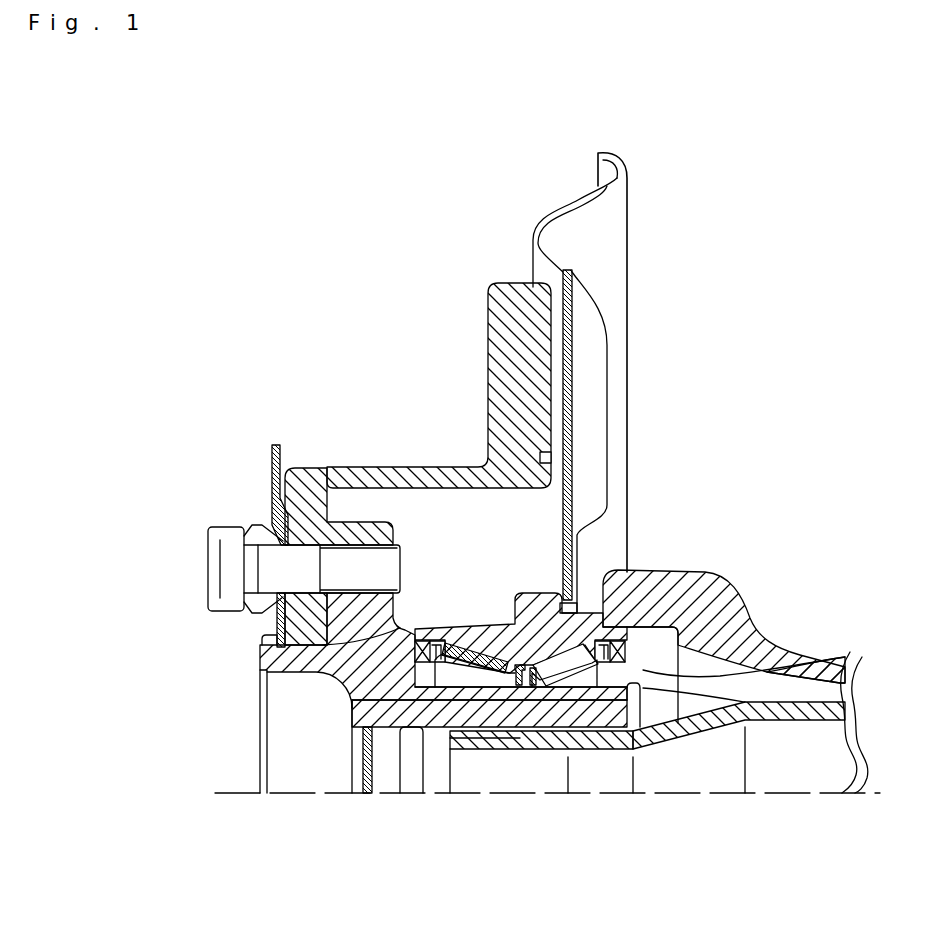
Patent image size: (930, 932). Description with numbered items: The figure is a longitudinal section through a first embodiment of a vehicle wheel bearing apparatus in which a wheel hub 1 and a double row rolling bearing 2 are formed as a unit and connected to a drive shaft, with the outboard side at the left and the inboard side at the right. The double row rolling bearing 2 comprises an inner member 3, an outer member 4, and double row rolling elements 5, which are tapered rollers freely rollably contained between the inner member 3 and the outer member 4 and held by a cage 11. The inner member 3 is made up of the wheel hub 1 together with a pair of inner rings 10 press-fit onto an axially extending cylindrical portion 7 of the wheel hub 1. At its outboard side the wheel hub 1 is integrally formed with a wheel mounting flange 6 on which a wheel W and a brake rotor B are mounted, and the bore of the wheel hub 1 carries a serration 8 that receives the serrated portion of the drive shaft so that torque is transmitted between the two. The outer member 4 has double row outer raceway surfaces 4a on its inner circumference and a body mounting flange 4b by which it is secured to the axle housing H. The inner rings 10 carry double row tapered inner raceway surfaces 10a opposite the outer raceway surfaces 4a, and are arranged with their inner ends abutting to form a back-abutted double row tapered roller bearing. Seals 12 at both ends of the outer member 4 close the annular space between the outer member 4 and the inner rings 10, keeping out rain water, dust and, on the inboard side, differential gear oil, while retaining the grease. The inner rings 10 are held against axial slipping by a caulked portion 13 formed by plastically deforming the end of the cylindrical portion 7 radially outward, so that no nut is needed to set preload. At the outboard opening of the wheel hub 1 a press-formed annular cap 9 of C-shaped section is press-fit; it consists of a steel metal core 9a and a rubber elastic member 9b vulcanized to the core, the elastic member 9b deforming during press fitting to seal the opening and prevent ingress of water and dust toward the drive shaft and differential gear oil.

The wheel hub 1 is at (310, 688).
The double row rolling bearing 2 is at (499, 608).
The inner member 3 is at (485, 678).
The outer member 4 is at (478, 628).
The outer raceway surfaces 4a is at (456, 632).
The body mounting flange 4b is at (539, 603).
The rolling elements 5 is at (552, 655).
The wheel mounting flange 6 is at (326, 490).
The cylindrical portion 7 is at (575, 662).
The serration 8 is at (593, 752).
The cap 9 is at (287, 870).
The metal core 9a is at (365, 760).
The elastic member 9b is at (350, 732).
The inner rings 10 is at (722, 666).
The inner raceway surfaces 10a is at (460, 678).
The cage 11 is at (520, 652).
The seals 12 is at (273, 637).
The caulked portion 13 is at (780, 668).
The brake rotor B is at (506, 358).
The wheel W is at (270, 452).
The axle housing H is at (655, 575).